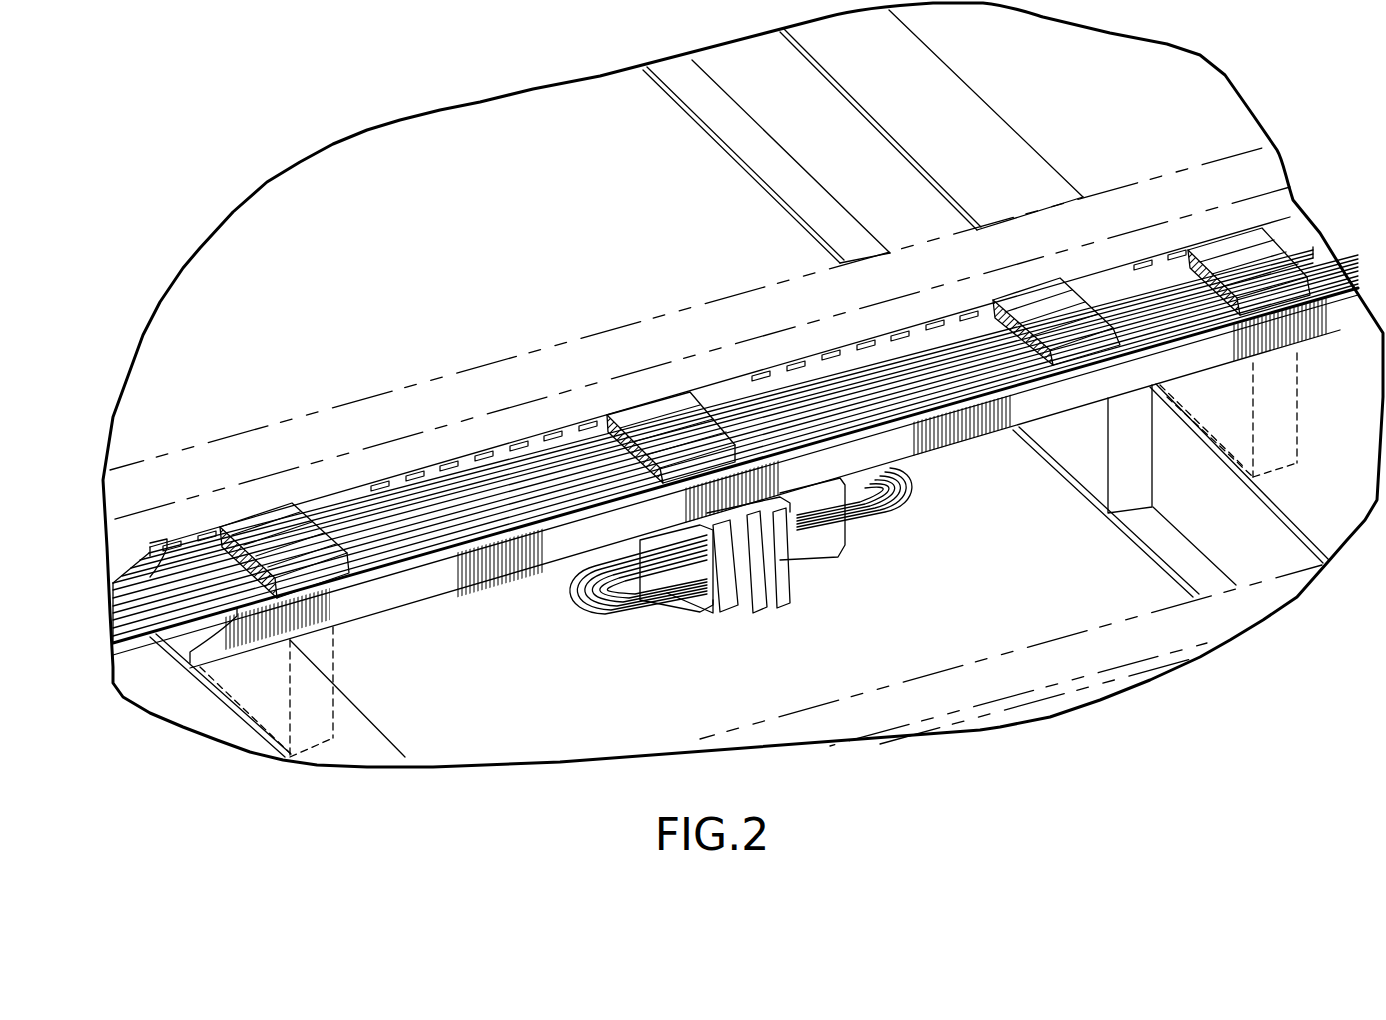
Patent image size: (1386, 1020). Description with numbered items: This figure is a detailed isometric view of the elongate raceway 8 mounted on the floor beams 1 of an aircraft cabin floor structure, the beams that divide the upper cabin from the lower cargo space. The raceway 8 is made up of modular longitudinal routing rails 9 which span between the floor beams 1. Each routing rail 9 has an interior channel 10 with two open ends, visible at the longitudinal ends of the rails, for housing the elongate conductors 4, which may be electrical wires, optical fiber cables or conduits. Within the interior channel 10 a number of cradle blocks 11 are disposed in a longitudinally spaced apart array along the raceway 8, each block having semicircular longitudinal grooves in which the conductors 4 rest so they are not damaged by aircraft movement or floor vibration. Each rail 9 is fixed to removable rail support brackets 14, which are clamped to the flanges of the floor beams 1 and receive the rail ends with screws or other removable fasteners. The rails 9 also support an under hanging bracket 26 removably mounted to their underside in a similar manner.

The floor beam 1 is at (350, 724).
The elongate conductors 4 is at (134, 620).
The elongate raceway 8 is at (377, 533).
The routing rail 9 is at (540, 443).
The interior channel 10 is at (777, 403).
The cradle block 11 is at (267, 537).
The rail support bracket 14 is at (1080, 457).
The under hanging bracket 26 is at (748, 565).